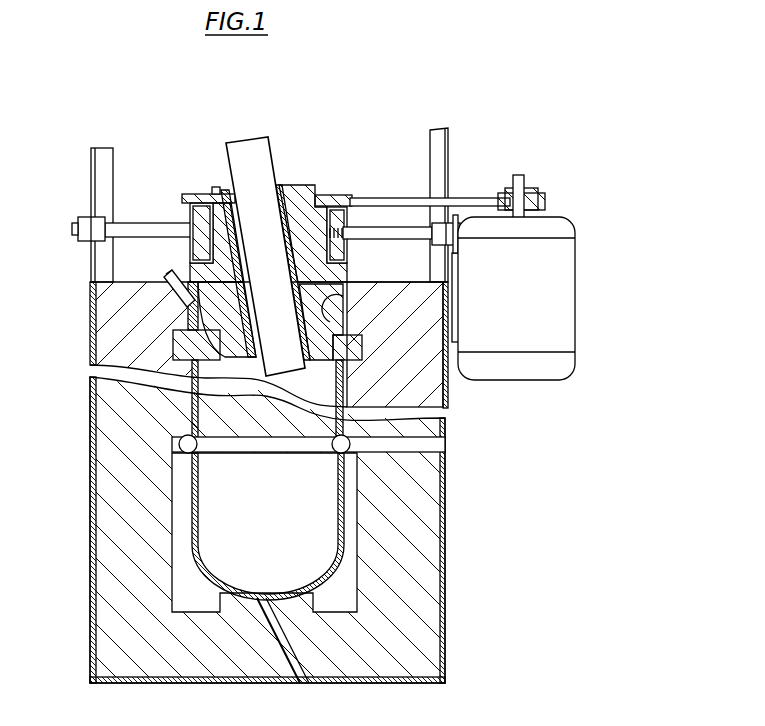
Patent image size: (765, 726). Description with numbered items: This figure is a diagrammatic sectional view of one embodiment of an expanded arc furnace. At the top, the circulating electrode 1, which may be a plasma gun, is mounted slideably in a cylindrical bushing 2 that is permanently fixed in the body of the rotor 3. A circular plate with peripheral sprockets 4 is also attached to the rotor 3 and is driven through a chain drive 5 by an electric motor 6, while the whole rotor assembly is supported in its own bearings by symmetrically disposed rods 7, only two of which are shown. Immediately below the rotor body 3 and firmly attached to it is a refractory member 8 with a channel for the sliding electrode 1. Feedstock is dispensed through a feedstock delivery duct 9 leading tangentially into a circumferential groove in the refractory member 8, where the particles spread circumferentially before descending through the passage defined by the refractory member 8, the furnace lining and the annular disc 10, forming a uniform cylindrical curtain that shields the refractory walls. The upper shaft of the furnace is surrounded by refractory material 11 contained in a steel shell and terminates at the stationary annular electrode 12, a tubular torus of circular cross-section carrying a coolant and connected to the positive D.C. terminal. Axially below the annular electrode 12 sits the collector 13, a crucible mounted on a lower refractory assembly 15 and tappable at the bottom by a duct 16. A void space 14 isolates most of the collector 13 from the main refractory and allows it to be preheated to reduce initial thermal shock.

The circulating electrode 1 is at (256, 168).
The cylindrical bushing 2 is at (284, 198).
The rotor 3 is at (303, 200).
The circular plate with peripheral sprockets 4 is at (334, 197).
The chain drive 5 is at (457, 203).
The electric motor 6 is at (518, 265).
The rods 7 is at (163, 230).
The refractory member 8 is at (213, 323).
The feedstock delivery duct 9 is at (162, 277).
The annular disc 10 is at (185, 351).
The refractory material 11 is at (427, 387).
The stationary annular electrode 12 is at (350, 447).
The collector 13 is at (342, 527).
The void space 14 is at (343, 582).
The lower refractory assembly 15 is at (385, 618).
The duct 16 is at (305, 670).